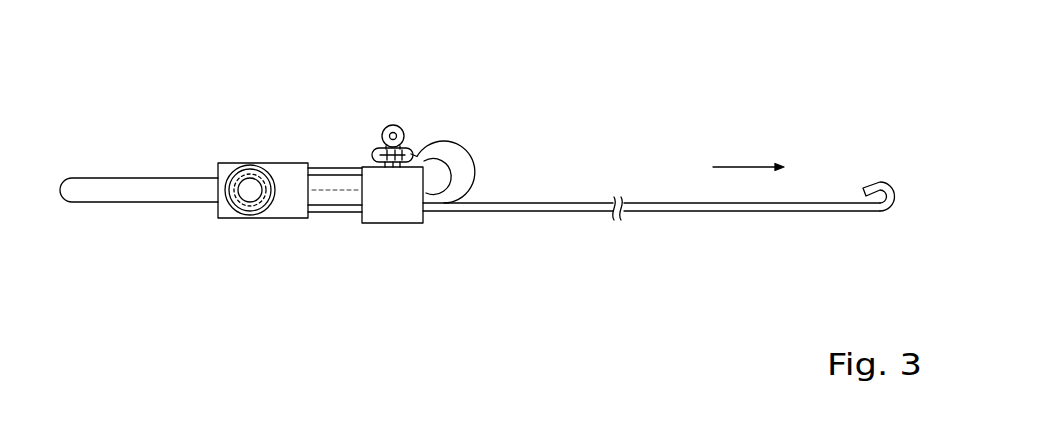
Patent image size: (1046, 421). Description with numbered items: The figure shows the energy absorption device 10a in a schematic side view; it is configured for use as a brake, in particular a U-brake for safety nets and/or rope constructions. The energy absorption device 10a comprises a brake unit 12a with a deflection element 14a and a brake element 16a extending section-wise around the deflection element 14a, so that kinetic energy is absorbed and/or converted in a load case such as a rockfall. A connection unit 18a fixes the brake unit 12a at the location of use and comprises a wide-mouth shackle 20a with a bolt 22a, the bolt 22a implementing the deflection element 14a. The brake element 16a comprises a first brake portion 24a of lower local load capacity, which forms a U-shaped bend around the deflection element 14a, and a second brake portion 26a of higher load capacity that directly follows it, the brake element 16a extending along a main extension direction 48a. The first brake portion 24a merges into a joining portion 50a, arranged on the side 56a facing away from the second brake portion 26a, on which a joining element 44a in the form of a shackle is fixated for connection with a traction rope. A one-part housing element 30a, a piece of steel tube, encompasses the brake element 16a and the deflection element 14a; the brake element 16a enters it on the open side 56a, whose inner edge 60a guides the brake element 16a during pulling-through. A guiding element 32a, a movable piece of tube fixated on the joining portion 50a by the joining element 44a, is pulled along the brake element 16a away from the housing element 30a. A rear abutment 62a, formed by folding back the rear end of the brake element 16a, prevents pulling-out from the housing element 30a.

The energy absorption device 10a is at (482, 110).
The brake unit 12a is at (332, 216).
The deflection element 14a is at (258, 165).
The brake element 16a is at (585, 208).
The connection unit 18a is at (113, 158).
The shackle 20a is at (165, 178).
The bolt 22a is at (250, 190).
The first brake portion 24a is at (352, 242).
The second brake portion 26a is at (540, 214).
The housing element 30a is at (283, 178).
The guiding element 32a is at (407, 195).
The joining element 44a is at (455, 144).
The main extension direction 48a is at (745, 167).
The joining portion 50a is at (337, 166).
The side 56a is at (316, 189).
The inner edge 60a is at (314, 215).
The rear abutment 62a is at (870, 176).